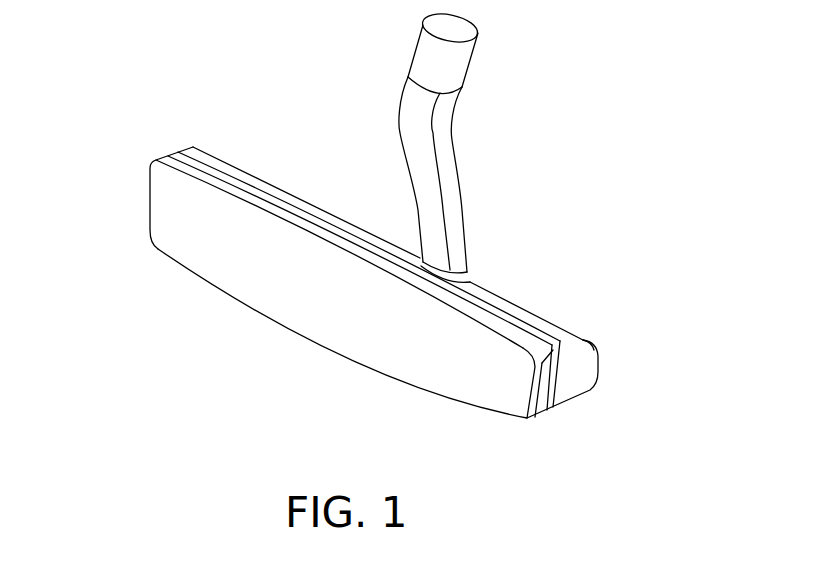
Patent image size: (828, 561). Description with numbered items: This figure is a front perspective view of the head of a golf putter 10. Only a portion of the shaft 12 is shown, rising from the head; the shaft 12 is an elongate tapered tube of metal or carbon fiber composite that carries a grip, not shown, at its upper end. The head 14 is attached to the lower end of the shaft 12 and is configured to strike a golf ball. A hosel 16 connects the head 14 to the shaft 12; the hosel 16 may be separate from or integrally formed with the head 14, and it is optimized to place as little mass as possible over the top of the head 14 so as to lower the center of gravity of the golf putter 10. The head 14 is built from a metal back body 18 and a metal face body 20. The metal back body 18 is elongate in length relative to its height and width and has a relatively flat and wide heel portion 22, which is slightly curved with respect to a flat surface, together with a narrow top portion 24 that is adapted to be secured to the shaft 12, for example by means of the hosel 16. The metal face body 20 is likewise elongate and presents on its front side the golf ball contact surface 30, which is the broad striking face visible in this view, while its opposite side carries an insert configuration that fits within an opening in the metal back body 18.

The golf putter 10 is at (380, 239).
The shaft 12 is at (440, 62).
The head 14 is at (366, 298).
The hosel 16 is at (458, 252).
The metal back body 18 is at (600, 366).
The metal face body 20 is at (150, 210).
The heel portion 22 is at (578, 393).
The top portion 24 is at (280, 198).
The golf ball contact surface 30 is at (297, 280).